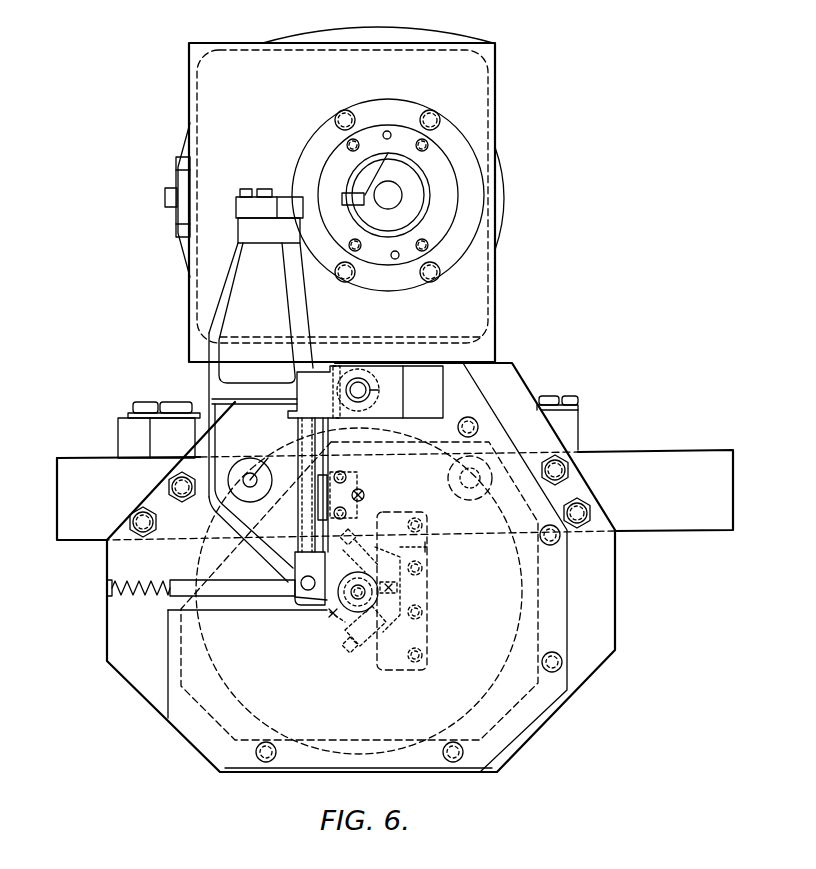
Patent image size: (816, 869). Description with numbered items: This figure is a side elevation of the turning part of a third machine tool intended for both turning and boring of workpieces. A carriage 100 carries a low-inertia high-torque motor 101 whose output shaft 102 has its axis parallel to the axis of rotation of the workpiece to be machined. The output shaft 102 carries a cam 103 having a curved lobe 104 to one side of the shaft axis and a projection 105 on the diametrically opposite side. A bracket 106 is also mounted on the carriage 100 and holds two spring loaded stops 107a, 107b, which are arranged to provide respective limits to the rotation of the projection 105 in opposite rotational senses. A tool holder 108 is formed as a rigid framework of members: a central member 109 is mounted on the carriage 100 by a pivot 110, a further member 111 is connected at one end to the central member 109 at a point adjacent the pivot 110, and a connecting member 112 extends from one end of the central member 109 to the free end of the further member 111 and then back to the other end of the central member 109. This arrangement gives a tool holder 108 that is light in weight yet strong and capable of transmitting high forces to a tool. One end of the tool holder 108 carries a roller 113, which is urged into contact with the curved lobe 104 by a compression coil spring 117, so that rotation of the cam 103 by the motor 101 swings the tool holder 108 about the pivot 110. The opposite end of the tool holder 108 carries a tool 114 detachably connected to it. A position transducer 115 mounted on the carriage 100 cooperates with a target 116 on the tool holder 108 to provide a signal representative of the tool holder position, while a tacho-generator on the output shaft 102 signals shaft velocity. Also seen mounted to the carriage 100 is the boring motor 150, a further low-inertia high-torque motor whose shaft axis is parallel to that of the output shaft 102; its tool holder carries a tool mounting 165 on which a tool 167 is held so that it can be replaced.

The carriage 100 is at (658, 459).
The low-inertia high-torque motor 101 is at (513, 626).
The output shaft 102 is at (370, 597).
The cam 103 is at (335, 624).
The curved lobe 104 is at (333, 613).
The projection 105 is at (398, 587).
The bracket 106 is at (427, 547).
The spring loaded stop 107a is at (362, 532).
The spring loaded stop 107b is at (362, 655).
The tool holder 108 is at (204, 348).
The central member 109 is at (304, 332).
The pivot 110 is at (366, 387).
The further member 111 is at (262, 398).
The connecting member 112 is at (205, 428).
The roller 113 is at (283, 583).
The tool 114 is at (299, 200).
The position transducer 115 is at (352, 486).
The target 116 is at (306, 492).
The compression coil spring 117 is at (130, 594).
The low-inertia high-torque motor 150 is at (500, 188).
The tool mounting 165 is at (420, 200).
The tool 167 is at (346, 190).